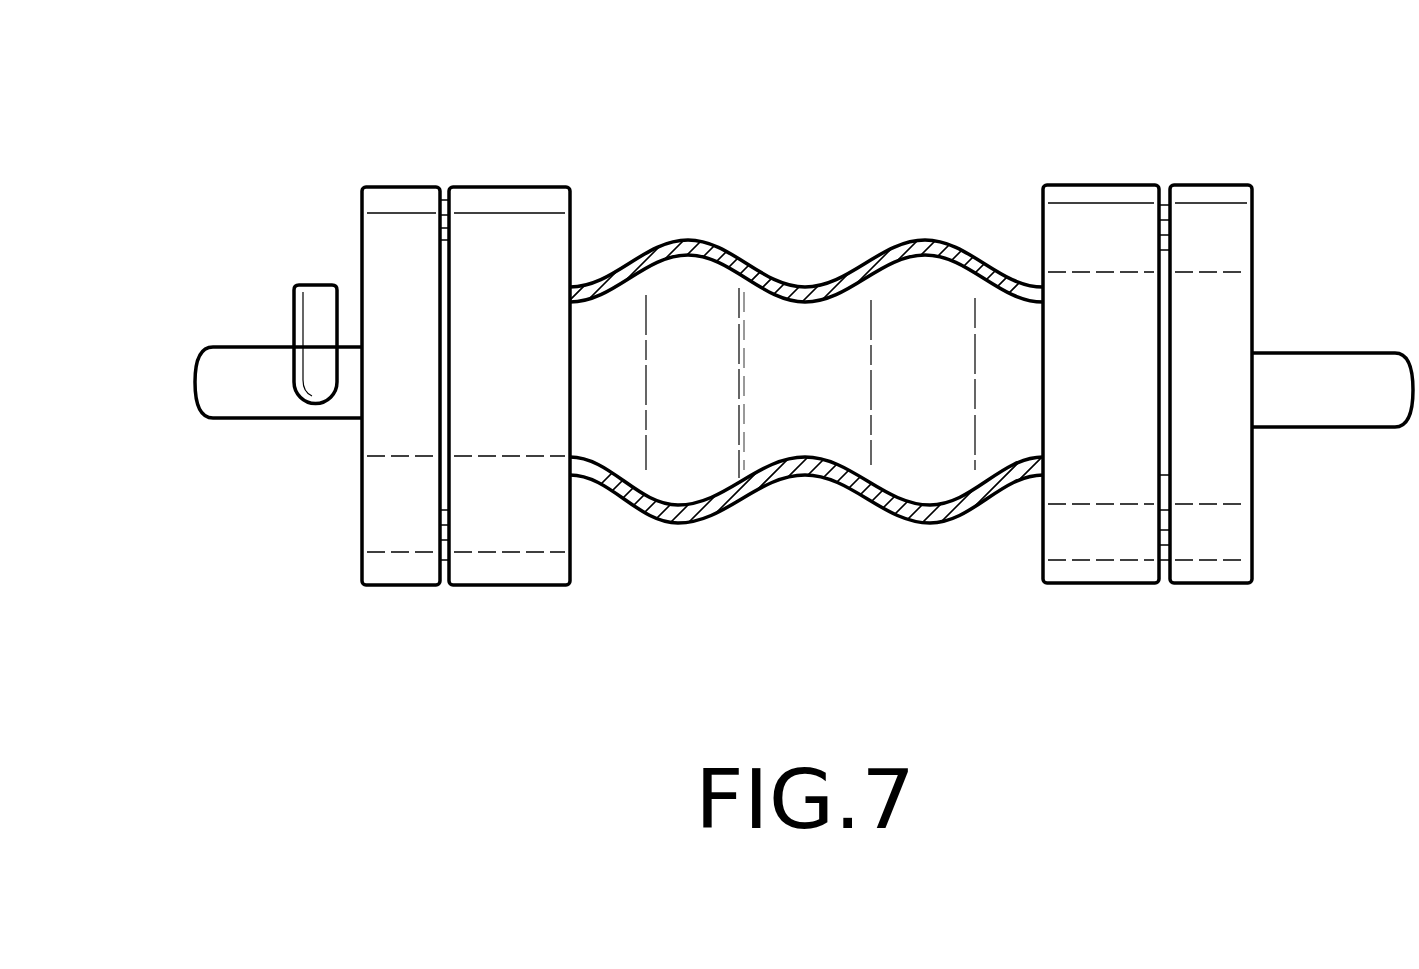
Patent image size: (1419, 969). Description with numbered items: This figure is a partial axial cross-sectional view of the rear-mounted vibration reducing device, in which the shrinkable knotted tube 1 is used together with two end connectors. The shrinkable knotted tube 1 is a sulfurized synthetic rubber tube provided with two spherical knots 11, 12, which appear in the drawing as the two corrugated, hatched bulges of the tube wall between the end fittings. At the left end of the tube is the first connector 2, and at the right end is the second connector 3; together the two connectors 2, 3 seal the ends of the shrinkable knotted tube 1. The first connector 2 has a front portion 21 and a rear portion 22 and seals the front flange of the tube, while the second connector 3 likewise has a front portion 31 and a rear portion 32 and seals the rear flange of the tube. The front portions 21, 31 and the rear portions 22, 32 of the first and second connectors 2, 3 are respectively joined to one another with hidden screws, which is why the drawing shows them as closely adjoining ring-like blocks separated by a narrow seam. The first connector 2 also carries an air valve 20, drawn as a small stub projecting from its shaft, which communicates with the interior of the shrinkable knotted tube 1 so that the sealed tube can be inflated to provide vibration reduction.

The shrinkable knotted tube 1 is at (803, 287).
The spherical knot 11 is at (676, 523).
The spherical knot 12 is at (932, 522).
The first connector 2 is at (305, 245).
The air valve 20 is at (307, 313).
The front portion 21 is at (382, 524).
The rear portion 22 is at (502, 208).
The second connector 3 is at (1278, 273).
The front portion 31 is at (1240, 480).
The rear portion 32 is at (1107, 203).